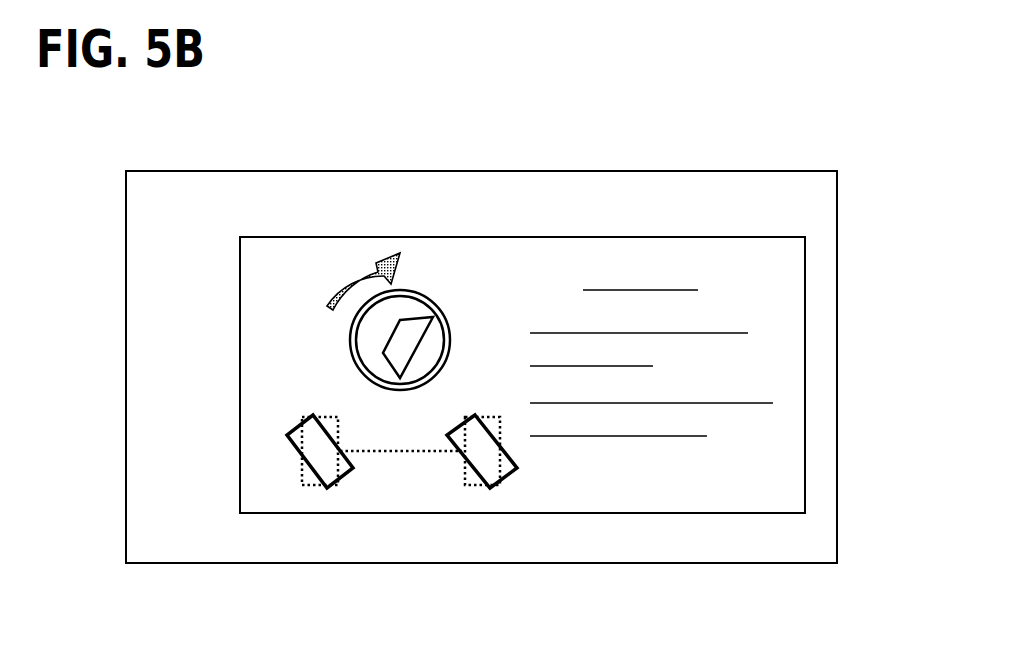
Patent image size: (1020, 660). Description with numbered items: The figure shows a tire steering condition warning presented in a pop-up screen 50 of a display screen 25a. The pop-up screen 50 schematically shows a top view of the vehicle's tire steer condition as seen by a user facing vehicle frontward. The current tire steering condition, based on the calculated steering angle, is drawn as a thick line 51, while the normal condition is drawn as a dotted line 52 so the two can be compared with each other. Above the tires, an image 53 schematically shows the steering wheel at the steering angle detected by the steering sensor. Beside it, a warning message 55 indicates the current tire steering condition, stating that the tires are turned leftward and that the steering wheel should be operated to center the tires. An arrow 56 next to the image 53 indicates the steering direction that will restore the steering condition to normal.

The display screen 25a is at (572, 171).
The pop-up screen 50 is at (805, 371).
The thick line 51 is at (507, 475).
The dotted line 52 is at (465, 470).
The image 53 is at (420, 300).
The warning message 55 is at (700, 443).
The arrow 56 is at (353, 263).